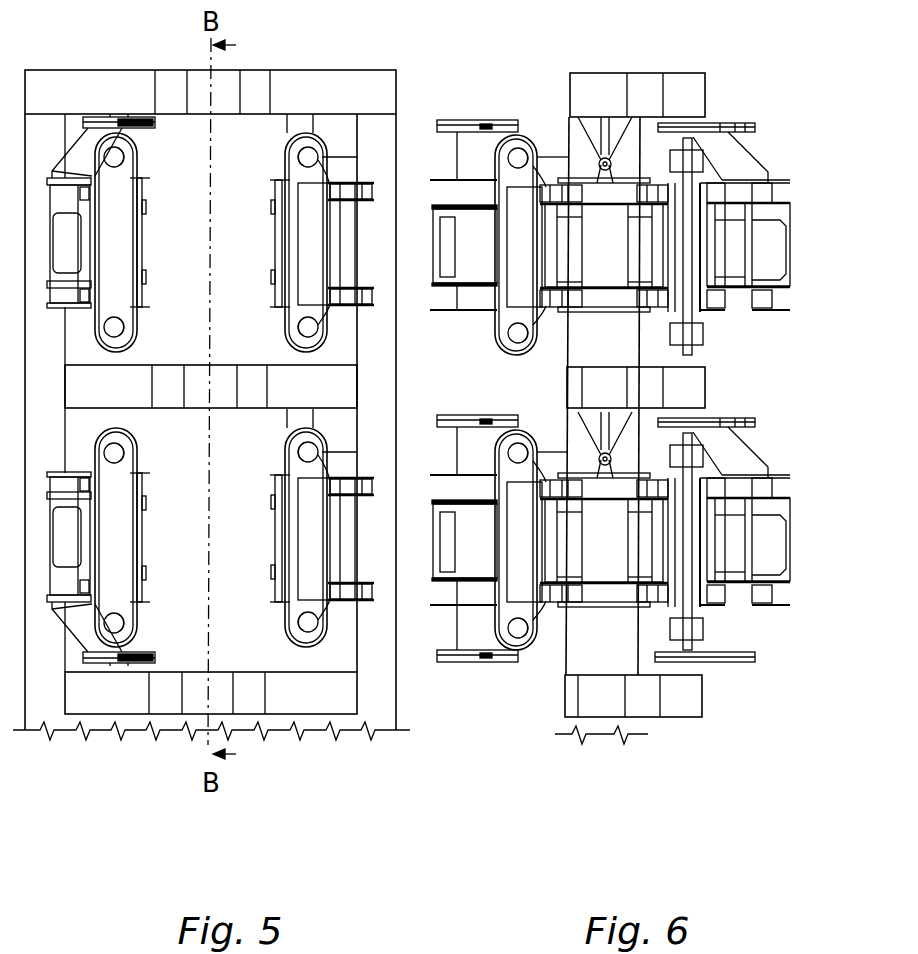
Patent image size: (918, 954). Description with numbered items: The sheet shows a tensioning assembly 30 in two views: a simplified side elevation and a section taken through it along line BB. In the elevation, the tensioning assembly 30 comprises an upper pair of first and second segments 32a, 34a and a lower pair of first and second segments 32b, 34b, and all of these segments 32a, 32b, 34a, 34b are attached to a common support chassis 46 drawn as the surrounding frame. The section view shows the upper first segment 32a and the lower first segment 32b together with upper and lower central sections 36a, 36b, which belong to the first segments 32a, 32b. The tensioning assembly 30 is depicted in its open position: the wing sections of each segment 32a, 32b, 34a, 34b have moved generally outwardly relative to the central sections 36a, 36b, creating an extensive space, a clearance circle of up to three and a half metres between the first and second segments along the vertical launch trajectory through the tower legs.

In FIG. 5, the tensioning assembly 30 is at (299, 780).
In FIG. 6, the tensioning assembly 30 is at (505, 781).
In FIG. 5, the upper first segment 32a is at (147, 237).
In FIG. 6, the upper first segment 32a is at (495, 349).
In FIG. 5, the lower first segment 32b is at (147, 534).
In FIG. 6, the lower first segment 32b is at (527, 432).
In FIG. 5, the upper second segment 34a is at (277, 237).
In FIG. 5, the lower second segment 34b is at (277, 534).
In FIG. 6, the upper central section 36a is at (577, 258).
In FIG. 6, the lower central section 36b is at (577, 553).
In FIG. 5, the common support chassis 46 is at (397, 94).
In FIG. 6, the common support chassis 46 is at (570, 90).